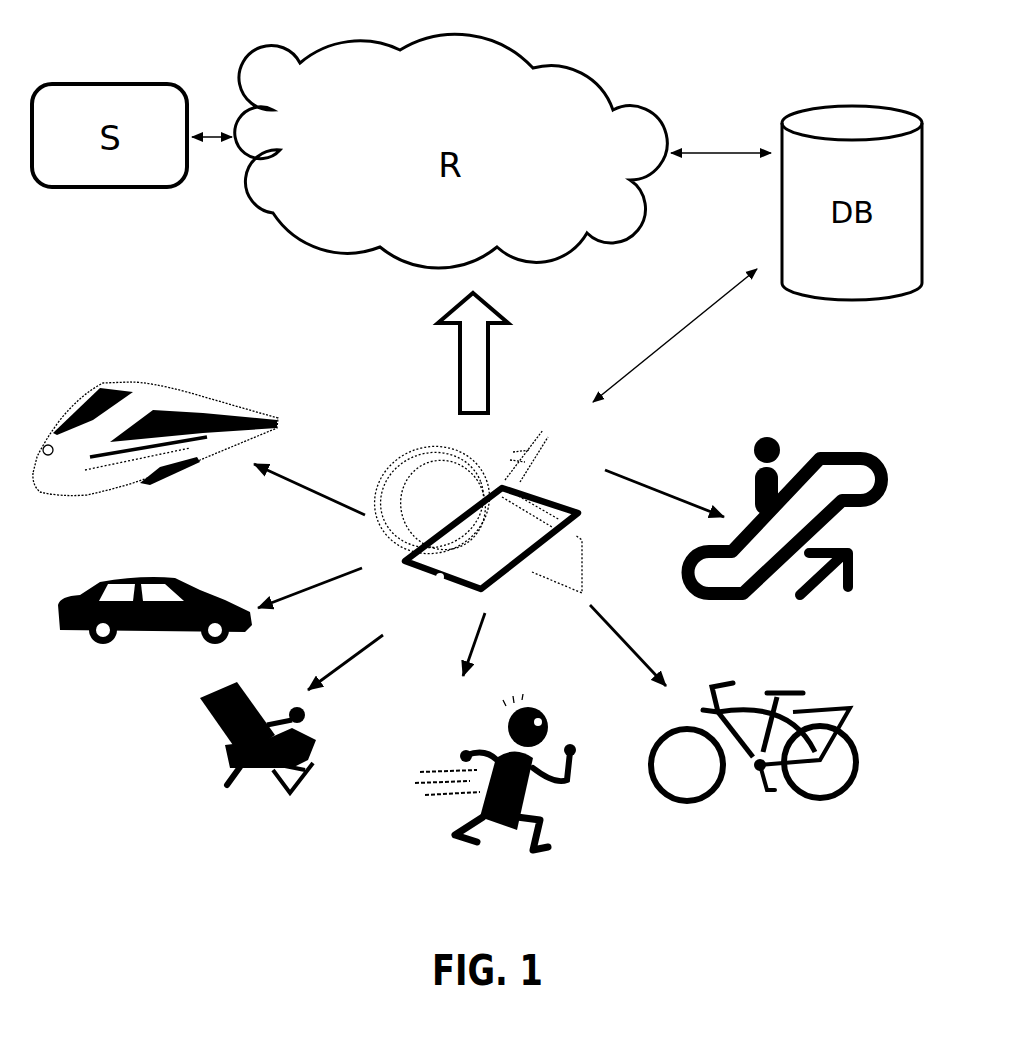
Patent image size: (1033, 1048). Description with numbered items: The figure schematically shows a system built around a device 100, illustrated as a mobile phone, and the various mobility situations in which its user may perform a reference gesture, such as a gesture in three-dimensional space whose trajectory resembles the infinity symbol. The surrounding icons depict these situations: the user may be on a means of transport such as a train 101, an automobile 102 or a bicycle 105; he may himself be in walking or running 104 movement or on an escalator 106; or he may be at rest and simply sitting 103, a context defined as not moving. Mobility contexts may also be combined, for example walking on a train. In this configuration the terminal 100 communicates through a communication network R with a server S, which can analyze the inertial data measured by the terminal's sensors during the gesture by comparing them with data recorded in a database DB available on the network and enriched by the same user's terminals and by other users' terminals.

The device 100 is at (373, 470).
The train 101 is at (83, 393).
The automobile 102 is at (82, 590).
The sitting 103 is at (215, 757).
The running 104 is at (448, 747).
The bicycle 105 is at (863, 720).
The escalator 106 is at (897, 462).